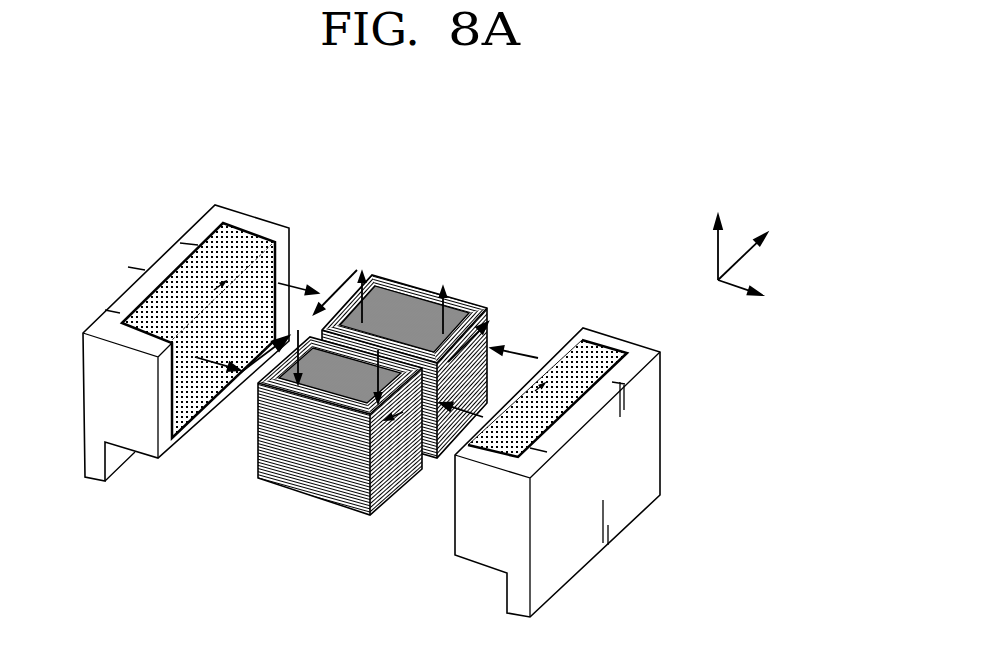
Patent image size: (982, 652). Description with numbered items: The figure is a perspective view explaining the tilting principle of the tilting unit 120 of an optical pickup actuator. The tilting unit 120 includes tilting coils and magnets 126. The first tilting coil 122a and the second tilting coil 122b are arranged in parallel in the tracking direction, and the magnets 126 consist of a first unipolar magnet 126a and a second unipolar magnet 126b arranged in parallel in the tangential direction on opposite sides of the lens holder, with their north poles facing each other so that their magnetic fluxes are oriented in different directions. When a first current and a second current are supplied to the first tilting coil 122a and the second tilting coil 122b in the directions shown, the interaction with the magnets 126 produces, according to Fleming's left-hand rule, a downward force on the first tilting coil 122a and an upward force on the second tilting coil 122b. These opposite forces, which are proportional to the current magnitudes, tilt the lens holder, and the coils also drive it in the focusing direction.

The tilting unit 120 is at (120, 115).
The first tilting coil 122a is at (302, 468).
The second tilting coil 122b is at (468, 302).
The magnets 126 is at (317, 143).
The first unipolar magnet 126a is at (264, 228).
The second unipolar magnet 126b is at (607, 336).